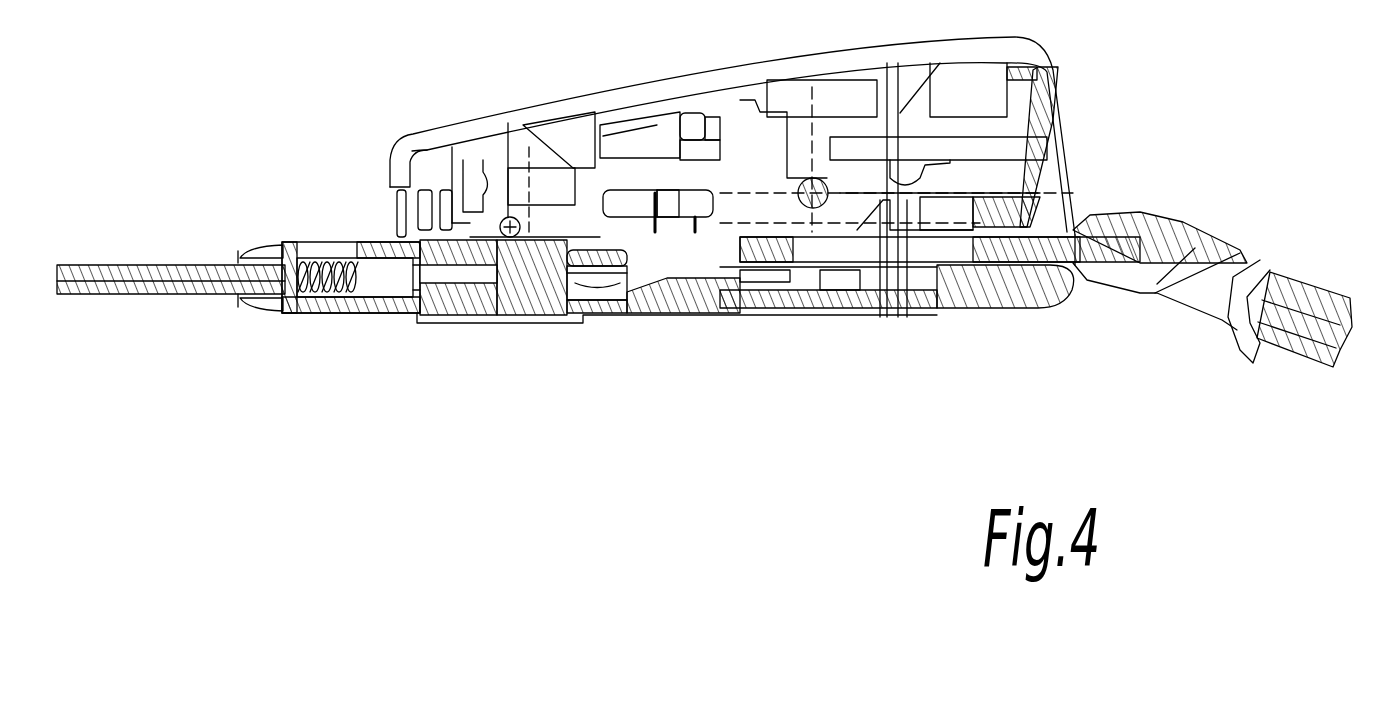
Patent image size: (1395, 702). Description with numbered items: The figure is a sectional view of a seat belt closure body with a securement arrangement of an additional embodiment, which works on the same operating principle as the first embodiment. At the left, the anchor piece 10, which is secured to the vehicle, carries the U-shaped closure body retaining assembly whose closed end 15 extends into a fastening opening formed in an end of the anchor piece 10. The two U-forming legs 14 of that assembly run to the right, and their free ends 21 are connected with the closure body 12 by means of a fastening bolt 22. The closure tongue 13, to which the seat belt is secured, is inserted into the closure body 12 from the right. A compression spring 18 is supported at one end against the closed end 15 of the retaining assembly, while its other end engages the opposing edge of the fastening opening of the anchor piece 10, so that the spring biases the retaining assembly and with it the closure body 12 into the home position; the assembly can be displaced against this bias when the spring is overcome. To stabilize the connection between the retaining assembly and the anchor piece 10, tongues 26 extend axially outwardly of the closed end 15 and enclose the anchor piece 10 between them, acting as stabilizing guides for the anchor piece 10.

The anchor piece 10 is at (103, 287).
The closure body 12 is at (742, 317).
The closure tongue 13 is at (1267, 263).
The U-forming legs 14 is at (378, 233).
The closed end 15 is at (283, 317).
The compression spring 18 is at (337, 310).
The free ends of the U-forming legs 21 is at (617, 325).
The fastening bolt 22 is at (549, 318).
The tongues 26 is at (250, 308).